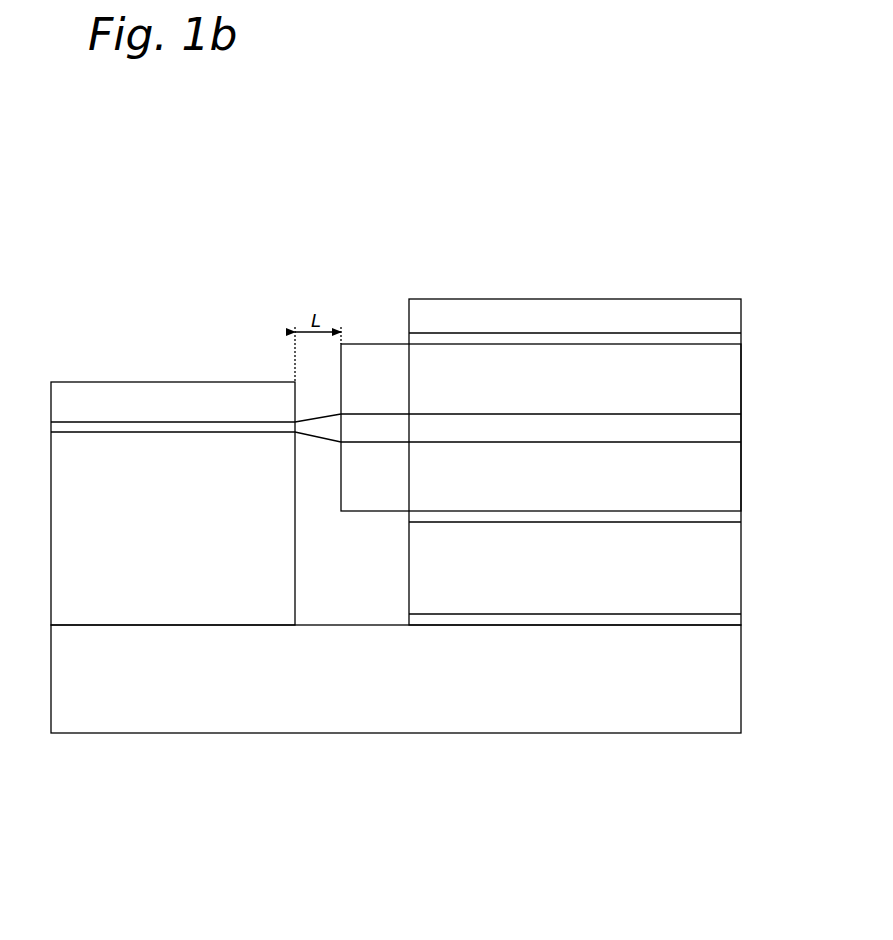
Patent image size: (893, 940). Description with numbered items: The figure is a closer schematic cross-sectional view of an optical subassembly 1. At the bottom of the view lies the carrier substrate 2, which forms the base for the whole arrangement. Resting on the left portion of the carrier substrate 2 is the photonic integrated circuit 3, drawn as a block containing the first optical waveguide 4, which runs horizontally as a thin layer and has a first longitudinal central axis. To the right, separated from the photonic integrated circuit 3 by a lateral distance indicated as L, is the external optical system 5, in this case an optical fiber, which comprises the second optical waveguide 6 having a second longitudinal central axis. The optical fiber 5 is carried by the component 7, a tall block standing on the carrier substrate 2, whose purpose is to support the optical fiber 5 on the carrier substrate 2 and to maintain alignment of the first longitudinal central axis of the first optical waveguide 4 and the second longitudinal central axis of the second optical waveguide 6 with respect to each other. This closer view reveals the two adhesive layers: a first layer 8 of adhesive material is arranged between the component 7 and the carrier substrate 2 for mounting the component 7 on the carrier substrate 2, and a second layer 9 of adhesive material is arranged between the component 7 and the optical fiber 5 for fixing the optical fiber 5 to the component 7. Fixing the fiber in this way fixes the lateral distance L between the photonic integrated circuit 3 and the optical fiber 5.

The optical subassembly 1 is at (550, 405).
The carrier substrate 2 is at (168, 687).
The photonic integrated circuit 3 is at (136, 364).
The first optical waveguide 4 is at (217, 423).
The external optical system 5 is at (367, 330).
The second optical waveguide 6 is at (708, 426).
The component 7 is at (598, 277).
The first layer of adhesive material 8 is at (720, 621).
The second layer of adhesive material 9 is at (718, 340).